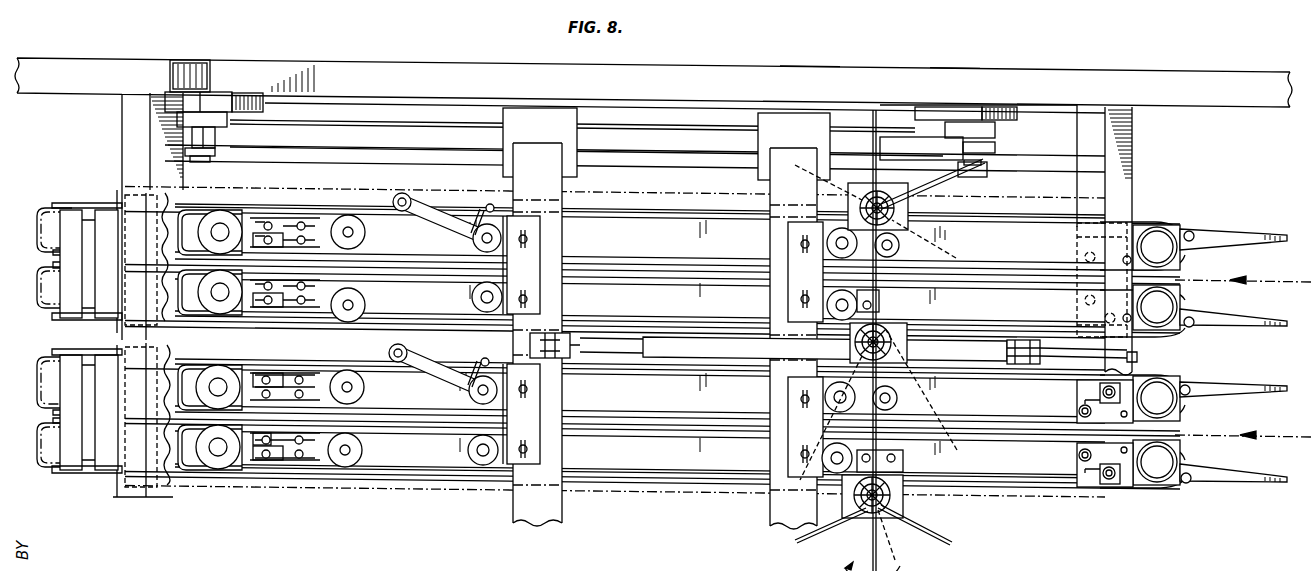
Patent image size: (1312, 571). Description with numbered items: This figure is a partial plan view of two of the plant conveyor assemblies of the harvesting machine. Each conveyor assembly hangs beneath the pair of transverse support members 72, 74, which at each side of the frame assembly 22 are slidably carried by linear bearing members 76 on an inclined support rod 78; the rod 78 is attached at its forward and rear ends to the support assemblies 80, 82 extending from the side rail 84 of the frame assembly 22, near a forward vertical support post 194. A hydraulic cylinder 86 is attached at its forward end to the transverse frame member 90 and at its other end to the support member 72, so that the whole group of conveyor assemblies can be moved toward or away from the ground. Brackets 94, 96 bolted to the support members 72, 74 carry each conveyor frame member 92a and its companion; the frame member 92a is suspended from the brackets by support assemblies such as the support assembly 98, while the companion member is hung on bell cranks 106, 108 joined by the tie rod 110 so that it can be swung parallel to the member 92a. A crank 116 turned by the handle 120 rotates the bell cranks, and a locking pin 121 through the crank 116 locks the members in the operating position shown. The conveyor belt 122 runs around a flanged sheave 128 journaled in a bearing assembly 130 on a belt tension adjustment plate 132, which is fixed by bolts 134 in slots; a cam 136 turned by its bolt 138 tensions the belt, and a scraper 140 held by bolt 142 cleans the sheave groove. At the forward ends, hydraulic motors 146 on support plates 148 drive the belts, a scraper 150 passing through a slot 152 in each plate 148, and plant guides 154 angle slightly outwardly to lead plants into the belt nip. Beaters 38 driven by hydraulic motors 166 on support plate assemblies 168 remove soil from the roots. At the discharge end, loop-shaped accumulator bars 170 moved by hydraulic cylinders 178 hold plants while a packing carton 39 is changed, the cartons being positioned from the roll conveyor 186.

The forward vertical support post 194 is at (258, 62).
The frame assembly 22 is at (845, 50).
The side rail 84 is at (948, 70).
The support assembly 80 is at (255, 108).
The inclined support rod 78 is at (418, 128).
The support assembly 82 is at (997, 130).
The transverse frame member 90 is at (1130, 157).
The packing carton 39 is at (144, 193).
The roll conveyor 186 is at (105, 210).
The hydraulic cylinder 178 is at (38, 212).
The accumulator bar 170 is at (53, 258).
The flanged sheave 128 is at (200, 225).
The bearing assembly 130 is at (220, 290).
The scraper 140 is at (275, 232).
The bolt 134 is at (299, 458).
The bolt 142 is at (255, 460).
The belt tension adjustment plate 132 is at (320, 218).
The bolt 138 is at (347, 228).
The cam 136 is at (350, 250).
The handle 120 is at (401, 194).
The crank 116 is at (423, 206).
The locking pin 121 is at (470, 230).
The bell crank 106 is at (489, 204).
The support assembly 98 is at (483, 465).
The bracket 94 is at (542, 242).
The bracket 96 is at (788, 298).
The transverse support member 72 is at (562, 190).
The transverse support member 74 is at (769, 200).
The tie rod 110 is at (673, 210).
The linear bearing member 76 is at (692, 161).
The hydraulic cylinder 86 is at (649, 337).
The conveyor belt 122 is at (996, 218).
The conveyor frame member 92a is at (982, 254).
The bell crank 108 is at (896, 252).
The support plate assembly 168 is at (897, 187).
The hydraulic motor 166 is at (895, 205).
The beater 38 is at (961, 161).
The hydraulic motor 146 is at (1160, 240).
The plant guide 154 is at (1256, 233).
The scraper 150 is at (1101, 390).
The support plate 148 is at (1078, 415).
The slot 152 is at (1085, 472).